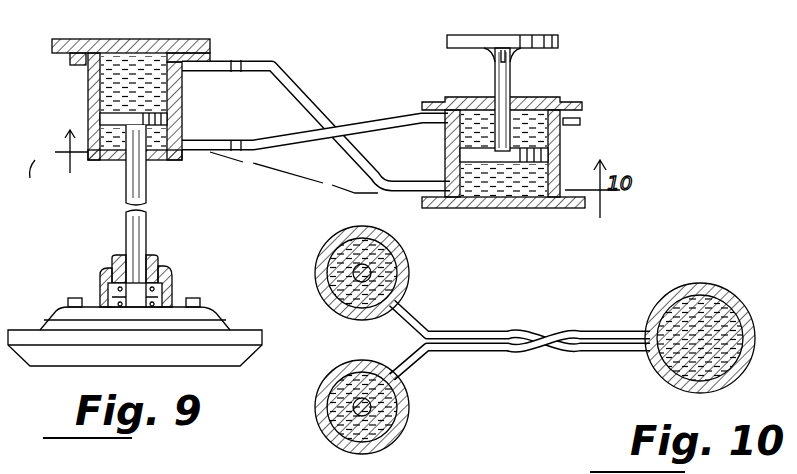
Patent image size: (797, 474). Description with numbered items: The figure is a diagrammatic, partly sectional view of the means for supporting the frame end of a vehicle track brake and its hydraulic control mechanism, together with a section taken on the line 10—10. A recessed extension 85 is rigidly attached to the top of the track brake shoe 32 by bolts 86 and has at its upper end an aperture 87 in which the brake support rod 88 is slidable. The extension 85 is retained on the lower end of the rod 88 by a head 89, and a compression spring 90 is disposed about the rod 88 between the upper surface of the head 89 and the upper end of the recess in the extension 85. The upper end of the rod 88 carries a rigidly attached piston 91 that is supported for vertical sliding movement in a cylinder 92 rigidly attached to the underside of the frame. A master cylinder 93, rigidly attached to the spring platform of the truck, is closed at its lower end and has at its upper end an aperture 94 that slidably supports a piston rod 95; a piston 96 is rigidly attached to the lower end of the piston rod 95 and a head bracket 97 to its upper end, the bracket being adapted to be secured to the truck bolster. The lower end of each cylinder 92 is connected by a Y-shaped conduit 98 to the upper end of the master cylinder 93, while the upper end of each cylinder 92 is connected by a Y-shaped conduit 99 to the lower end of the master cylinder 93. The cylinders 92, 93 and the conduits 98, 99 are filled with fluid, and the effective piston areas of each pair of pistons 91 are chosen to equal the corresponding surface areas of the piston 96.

In FIG. 9, the section line 10 is at (59, 154).
In FIG. 9, the track brake shoe 32 is at (231, 323).
In FIG. 9, the recessed extension 85 is at (173, 286).
In FIG. 9, the bolts 86 is at (201, 300).
In FIG. 9, the aperture 87 is at (151, 266).
In FIG. 9, the brake support rod 88 is at (144, 198).
In FIG. 10, the brake support rod 88 is at (346, 274).
In FIG. 9, the head 89 is at (112, 292).
In FIG. 9, the compression spring 90 is at (122, 262).
In FIG. 9, the piston 91 is at (110, 118).
In FIG. 9, the cylinder 92 is at (177, 113).
In FIG. 10, the cylinder 92 is at (336, 307).
In FIG. 9, the master cylinder 93 is at (448, 162).
In FIG. 10, the master cylinder 93 is at (672, 373).
In FIG. 9, the aperture 94 is at (524, 100).
In FIG. 9, the piston rod 95 is at (500, 78).
In FIG. 9, the piston 96 is at (562, 148).
In FIG. 9, the head bracket 97 is at (561, 42).
In FIG. 9, the Y-shaped conduit 98 is at (291, 142).
In FIG. 10, the Y-shaped conduit 98 is at (423, 328).
In FIG. 9, the Y-shaped conduit 99 is at (266, 67).
In FIG. 10, the Y-shaped conduit 99 is at (400, 331).